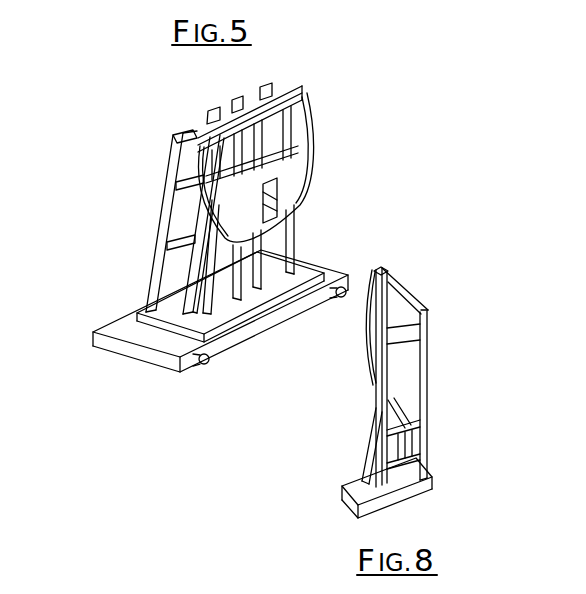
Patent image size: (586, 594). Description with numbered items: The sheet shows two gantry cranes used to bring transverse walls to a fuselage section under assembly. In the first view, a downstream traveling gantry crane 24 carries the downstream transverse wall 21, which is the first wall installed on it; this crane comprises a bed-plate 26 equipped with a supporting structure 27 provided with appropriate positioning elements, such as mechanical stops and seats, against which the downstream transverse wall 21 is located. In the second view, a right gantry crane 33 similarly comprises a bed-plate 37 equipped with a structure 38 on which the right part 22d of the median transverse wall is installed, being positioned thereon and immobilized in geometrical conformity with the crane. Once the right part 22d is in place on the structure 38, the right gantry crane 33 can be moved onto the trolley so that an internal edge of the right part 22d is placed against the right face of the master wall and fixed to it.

In FIG. 5, the downstream traveling gantry crane 24 is at (102, 203).
In FIG. 5, the supporting structure 27 is at (170, 188).
In FIG. 5, the downstream transverse wall 21 is at (304, 172).
In FIG. 5, the bed-plate 26 is at (118, 343).
In FIG. 8, the right gantry crane 33 is at (428, 287).
In FIG. 8, the structure 38 is at (430, 354).
In FIG. 8, the right part of the median wall 22d is at (400, 386).
In FIG. 8, the bed-plate 37 is at (430, 470).